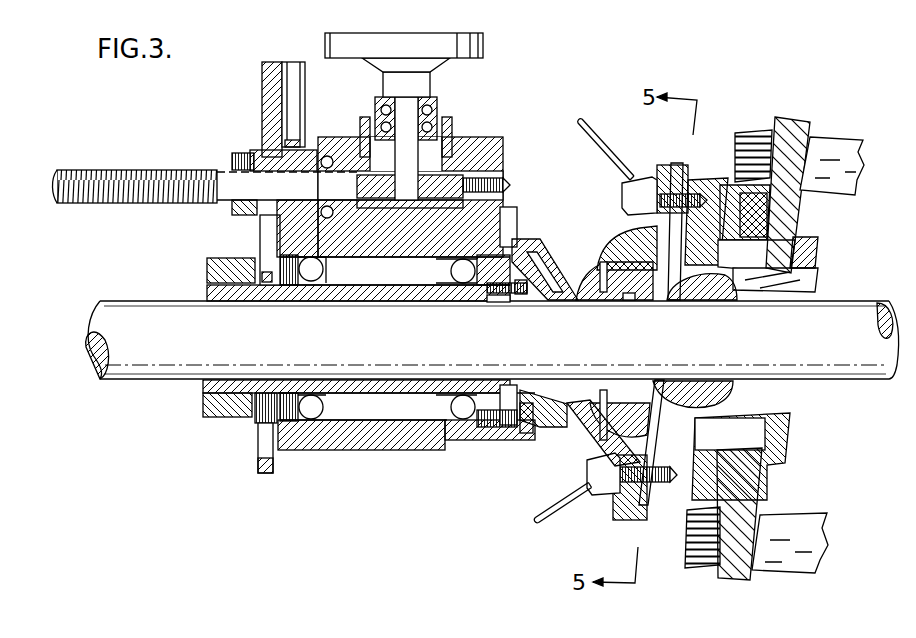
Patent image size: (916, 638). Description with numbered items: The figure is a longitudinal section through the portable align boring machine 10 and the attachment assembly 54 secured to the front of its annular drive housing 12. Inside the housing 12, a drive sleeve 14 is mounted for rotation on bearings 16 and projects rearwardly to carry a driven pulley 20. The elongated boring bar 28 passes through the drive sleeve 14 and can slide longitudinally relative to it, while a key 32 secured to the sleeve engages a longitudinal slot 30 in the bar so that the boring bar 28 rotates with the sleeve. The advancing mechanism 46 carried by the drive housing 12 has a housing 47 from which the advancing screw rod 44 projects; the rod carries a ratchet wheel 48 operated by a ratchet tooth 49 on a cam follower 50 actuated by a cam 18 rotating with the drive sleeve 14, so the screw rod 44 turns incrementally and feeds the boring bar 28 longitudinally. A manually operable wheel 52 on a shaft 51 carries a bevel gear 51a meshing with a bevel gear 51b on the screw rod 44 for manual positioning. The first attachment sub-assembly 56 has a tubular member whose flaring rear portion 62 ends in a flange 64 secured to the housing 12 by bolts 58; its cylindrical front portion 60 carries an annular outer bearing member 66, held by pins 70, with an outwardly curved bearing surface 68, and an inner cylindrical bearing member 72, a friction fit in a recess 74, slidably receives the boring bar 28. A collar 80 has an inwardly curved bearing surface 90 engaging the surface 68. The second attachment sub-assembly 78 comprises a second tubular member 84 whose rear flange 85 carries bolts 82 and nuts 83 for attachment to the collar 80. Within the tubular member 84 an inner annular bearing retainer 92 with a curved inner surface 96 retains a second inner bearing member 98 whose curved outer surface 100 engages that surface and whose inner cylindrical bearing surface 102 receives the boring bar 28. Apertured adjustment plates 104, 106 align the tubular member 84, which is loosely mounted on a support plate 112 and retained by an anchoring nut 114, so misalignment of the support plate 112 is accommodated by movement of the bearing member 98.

The portable align boring machine 10 is at (313, 462).
The annular drive housing 12 is at (367, 440).
The drive sleeve 14 is at (390, 420).
The bearings 16 is at (280, 253).
The cam 18 is at (255, 423).
The driven pulley 20 is at (203, 403).
The boring bar 28 is at (150, 365).
The longitudinal slot 30 is at (142, 300).
The key 32 is at (493, 302).
The advancing screw rod 44 is at (125, 170).
The advancing mechanism 46 is at (460, 130).
The housing 47 is at (497, 148).
The ratchet wheel 48 is at (273, 147).
The ratchet tooth 49 is at (293, 123).
The cam follower 50 is at (267, 80).
The shaft 51 is at (403, 108).
The bevel gear 51a is at (360, 170).
The bevel gear 51b is at (383, 200).
The manually-operable wheel 52 is at (480, 45).
The attachment assembly 54 is at (648, 170).
The first attachment sub-assembly 56 is at (550, 240).
The bolts 58 is at (487, 427).
The front portion 60 is at (568, 420).
The rear portion 62 is at (572, 403).
The flange 64 is at (523, 242).
The annular outer bearing member 66 is at (663, 413).
The outwardly curved bearing surface 68 is at (593, 267).
The pins 70 is at (597, 277).
The annular inner cylindrical bearing member 72 is at (633, 300).
The recess 74 is at (640, 380).
The second attachment sub-assembly 78 is at (703, 163).
The collar 80 is at (603, 233).
The bolts 82 is at (673, 165).
The nuts 83 is at (640, 180).
The second tubular member 84 is at (820, 277).
The flange 85 is at (717, 187).
The inwardly curved bearing surface 90 is at (650, 237).
The inner annular bearing retainer 92 is at (727, 305).
The curved inner bearing surface 96 is at (703, 300).
The second inner bearing member 98 is at (702, 378).
The curved outer surface 100 is at (747, 390).
The inner cylindrical bearing surface 102 is at (690, 378).
The adjustment plate 104 is at (693, 500).
The adjustment plate 106 is at (720, 488).
The support plate 112 is at (815, 125).
The anchoring nut 114 is at (823, 247).